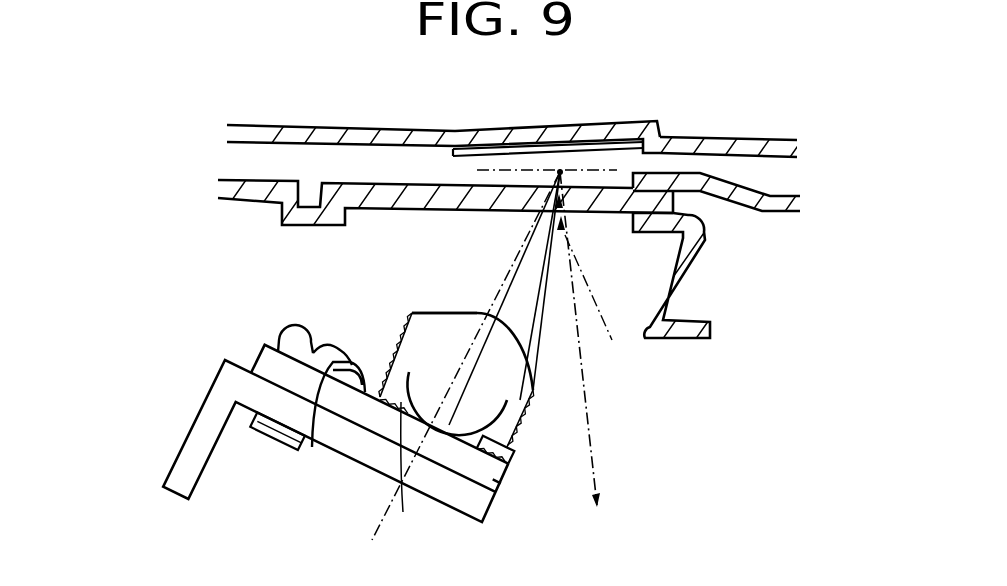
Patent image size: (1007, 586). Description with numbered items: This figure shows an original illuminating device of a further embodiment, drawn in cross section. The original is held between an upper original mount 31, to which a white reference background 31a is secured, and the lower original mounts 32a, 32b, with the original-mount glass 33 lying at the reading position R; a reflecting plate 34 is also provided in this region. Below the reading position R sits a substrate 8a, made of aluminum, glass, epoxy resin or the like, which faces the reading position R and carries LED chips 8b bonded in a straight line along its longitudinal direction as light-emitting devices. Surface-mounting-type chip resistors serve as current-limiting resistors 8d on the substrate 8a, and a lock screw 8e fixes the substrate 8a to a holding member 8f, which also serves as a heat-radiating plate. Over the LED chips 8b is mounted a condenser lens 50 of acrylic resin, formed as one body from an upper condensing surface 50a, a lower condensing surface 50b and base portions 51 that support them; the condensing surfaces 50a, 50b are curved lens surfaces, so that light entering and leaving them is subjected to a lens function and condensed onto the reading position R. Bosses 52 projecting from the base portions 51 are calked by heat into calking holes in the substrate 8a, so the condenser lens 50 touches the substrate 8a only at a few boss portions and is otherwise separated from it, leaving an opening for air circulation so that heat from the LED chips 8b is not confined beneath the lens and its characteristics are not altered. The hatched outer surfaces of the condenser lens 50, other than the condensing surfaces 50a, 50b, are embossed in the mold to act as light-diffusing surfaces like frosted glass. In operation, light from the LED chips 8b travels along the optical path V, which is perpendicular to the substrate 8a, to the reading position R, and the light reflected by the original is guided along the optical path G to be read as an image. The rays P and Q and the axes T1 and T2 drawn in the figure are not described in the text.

The original-mount glass 33 is at (373, 187).
The upper original mount 31 is at (700, 142).
The white reference background 31a is at (632, 130).
The lower original mount 32b is at (227, 182).
The lower original mount 32a is at (780, 212).
The reflecting plate 34 is at (680, 278).
The reading position R is at (557, 168).
The optical path V is at (510, 277).
The light ray P is at (540, 300).
The light ray Q is at (545, 348).
The optical path G is at (592, 447).
The optical axis T1 is at (404, 474).
The optical axis T2 is at (458, 372).
The condenser lens 50 is at (407, 330).
The condensing surface 50a is at (480, 318).
The condensing surface 50b is at (505, 433).
The boss 52 is at (378, 408).
The holding member 8f is at (185, 420).
The LED chip 8b is at (450, 442).
The substrate 8a is at (497, 465).
The base portion 51 is at (300, 448).
The current-limiting resistor 8d is at (340, 450).
The lock screw 8e is at (265, 335).